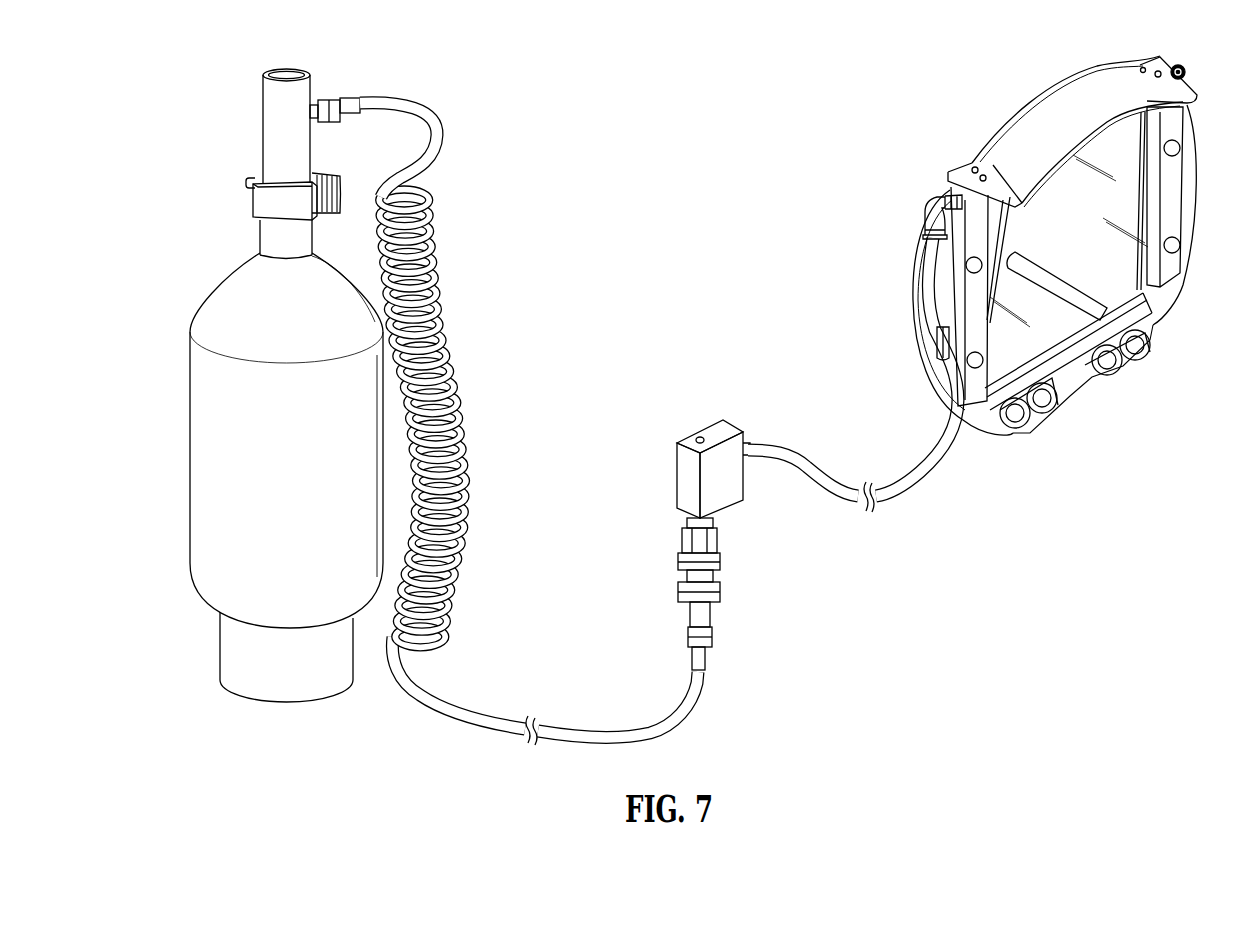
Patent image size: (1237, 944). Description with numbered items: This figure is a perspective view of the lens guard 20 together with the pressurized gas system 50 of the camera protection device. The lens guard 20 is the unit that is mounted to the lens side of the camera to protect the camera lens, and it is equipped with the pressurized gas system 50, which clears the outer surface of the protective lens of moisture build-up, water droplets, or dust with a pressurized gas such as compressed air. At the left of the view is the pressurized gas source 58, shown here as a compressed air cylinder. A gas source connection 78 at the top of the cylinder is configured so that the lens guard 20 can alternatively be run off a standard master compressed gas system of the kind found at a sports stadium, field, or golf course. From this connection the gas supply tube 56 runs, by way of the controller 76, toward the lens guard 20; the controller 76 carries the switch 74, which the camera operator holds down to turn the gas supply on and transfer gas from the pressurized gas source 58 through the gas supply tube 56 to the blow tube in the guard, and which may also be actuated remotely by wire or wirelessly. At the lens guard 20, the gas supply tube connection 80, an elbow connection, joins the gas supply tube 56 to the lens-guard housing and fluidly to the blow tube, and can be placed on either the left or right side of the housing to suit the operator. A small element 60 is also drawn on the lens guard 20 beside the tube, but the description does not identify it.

The lens guard 20 is at (1005, 95).
The pressurized gas system 50 is at (283, 63).
The gas supply tube 56 is at (920, 477).
The pressurized gas source 58 is at (197, 445).
The hose clip 60 is at (938, 353).
The switch 74 is at (694, 438).
The controller 76 is at (723, 494).
The gas source connection 78 is at (330, 100).
The gas supply tube connection 80 is at (930, 213).